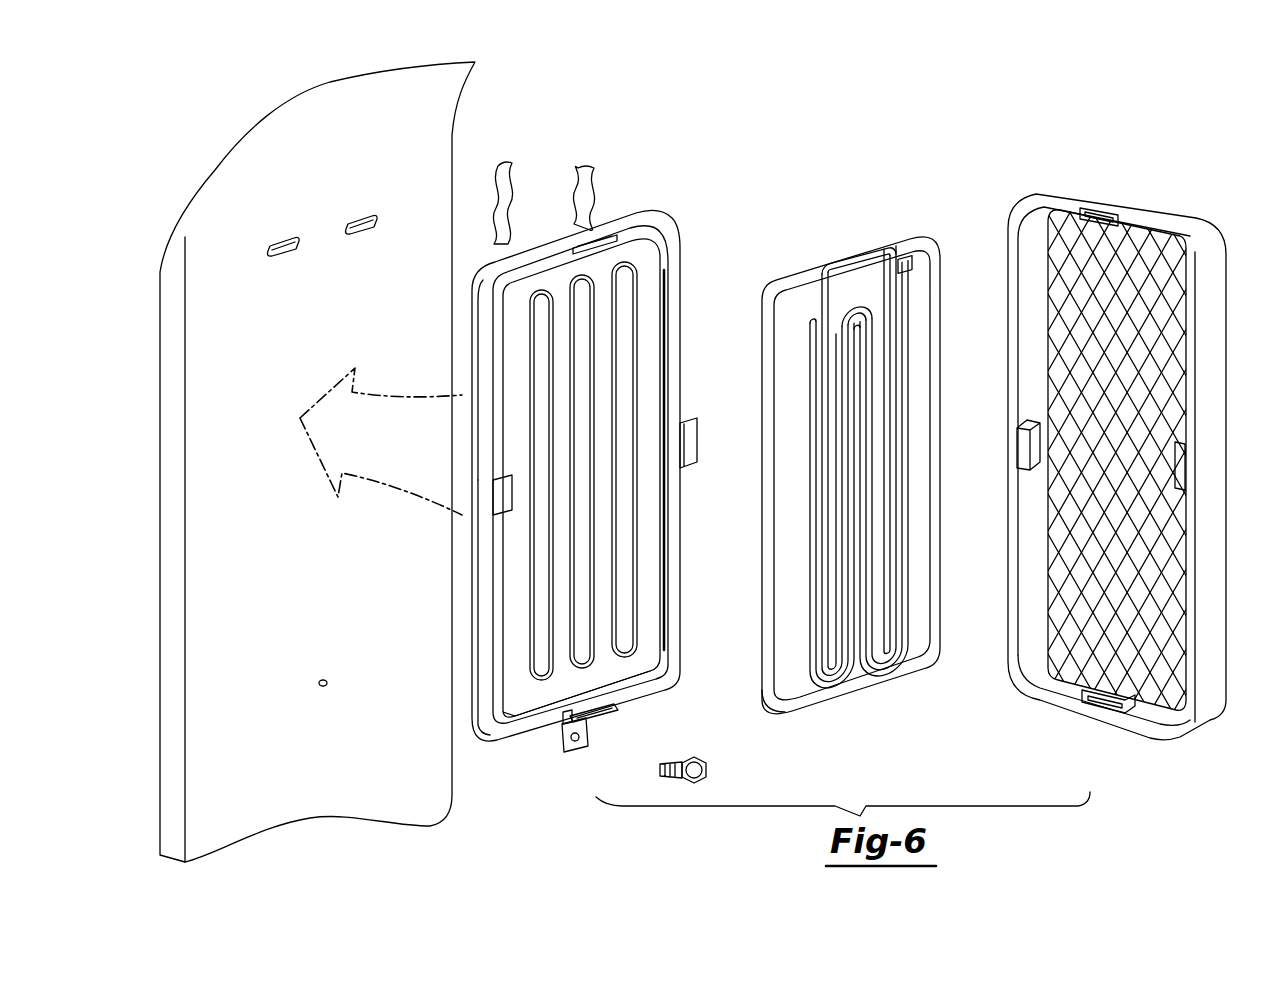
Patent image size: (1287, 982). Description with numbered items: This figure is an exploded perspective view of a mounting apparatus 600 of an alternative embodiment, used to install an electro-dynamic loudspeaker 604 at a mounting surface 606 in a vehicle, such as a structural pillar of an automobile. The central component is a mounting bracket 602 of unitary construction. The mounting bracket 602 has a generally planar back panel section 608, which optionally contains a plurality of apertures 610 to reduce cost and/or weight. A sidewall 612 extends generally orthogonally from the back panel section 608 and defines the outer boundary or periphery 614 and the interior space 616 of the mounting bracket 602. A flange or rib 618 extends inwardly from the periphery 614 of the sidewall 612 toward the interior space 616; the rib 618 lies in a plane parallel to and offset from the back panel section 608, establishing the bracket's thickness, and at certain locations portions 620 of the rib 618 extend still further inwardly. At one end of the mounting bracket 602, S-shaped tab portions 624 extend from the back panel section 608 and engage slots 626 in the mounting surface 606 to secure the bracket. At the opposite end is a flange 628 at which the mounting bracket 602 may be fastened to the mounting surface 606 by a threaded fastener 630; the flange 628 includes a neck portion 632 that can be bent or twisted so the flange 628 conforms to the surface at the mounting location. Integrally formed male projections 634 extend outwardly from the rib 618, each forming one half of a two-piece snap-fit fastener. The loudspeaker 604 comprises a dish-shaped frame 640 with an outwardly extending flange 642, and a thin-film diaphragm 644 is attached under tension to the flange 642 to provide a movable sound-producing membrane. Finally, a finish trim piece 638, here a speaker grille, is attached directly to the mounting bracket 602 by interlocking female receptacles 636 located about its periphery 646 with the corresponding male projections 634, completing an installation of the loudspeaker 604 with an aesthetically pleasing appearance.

The mounting apparatus 600 is at (663, 128).
The mounting bracket 602 is at (566, 451).
The loudspeaker 604 is at (875, 457).
The mounting surface 606 is at (273, 144).
The back panel section 608 is at (520, 695).
The apertures 610 is at (537, 318).
The sidewall 612 is at (480, 625).
The periphery 614 is at (483, 335).
The interior space 616 is at (627, 664).
The rib 618 is at (660, 237).
The portions of the rib 620 is at (565, 258).
The S-shaped tab portion 624 is at (505, 198).
The slot 626 is at (360, 213).
The flange 628 is at (566, 752).
The threaded fastener 630 is at (705, 775).
The neck portion 632 is at (568, 722).
The male projections 634 is at (690, 428).
The female receptacles 636 is at (1017, 445).
The finish trim piece 638 is at (1120, 491).
The dish-shaped frame 640 is at (770, 280).
The flange 642 is at (778, 690).
The thin-film diaphragm 644 is at (925, 575).
The periphery 646 is at (1195, 400).